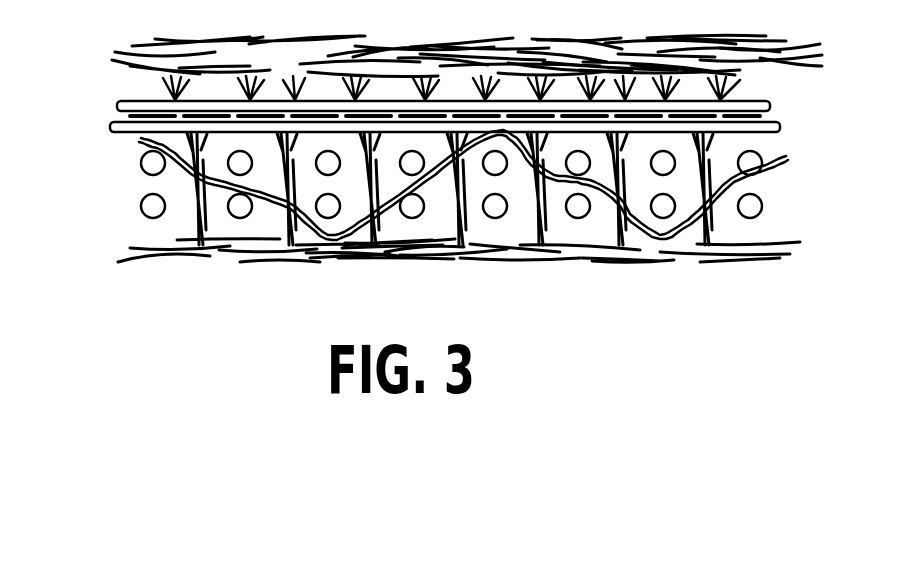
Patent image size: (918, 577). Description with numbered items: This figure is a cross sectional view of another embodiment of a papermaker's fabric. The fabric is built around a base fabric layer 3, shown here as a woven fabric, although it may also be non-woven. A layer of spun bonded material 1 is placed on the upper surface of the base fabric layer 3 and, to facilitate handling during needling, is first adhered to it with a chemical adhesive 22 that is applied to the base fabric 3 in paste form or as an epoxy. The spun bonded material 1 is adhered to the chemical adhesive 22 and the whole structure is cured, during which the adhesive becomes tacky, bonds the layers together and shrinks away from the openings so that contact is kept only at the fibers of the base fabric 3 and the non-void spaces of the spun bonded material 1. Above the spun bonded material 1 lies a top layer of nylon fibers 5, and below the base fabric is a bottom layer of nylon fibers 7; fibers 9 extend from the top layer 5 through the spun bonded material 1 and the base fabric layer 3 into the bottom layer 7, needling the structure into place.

The spun bonded material 1 is at (770, 106).
The base fabric layer 3 is at (92, 185).
The top layer of nylon fibers 5 is at (115, 50).
The bottom layer of nylon fibers 7 is at (118, 263).
The fibers 9 is at (207, 213).
The chemical adhesive 22 is at (112, 125).